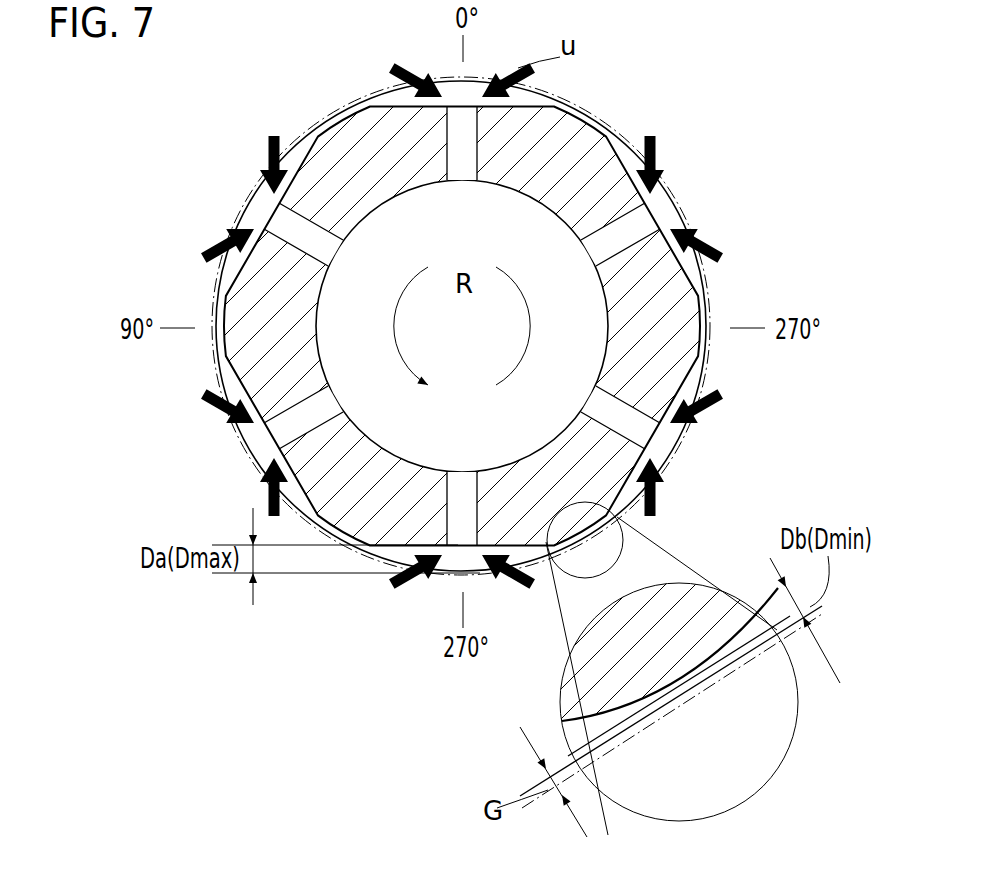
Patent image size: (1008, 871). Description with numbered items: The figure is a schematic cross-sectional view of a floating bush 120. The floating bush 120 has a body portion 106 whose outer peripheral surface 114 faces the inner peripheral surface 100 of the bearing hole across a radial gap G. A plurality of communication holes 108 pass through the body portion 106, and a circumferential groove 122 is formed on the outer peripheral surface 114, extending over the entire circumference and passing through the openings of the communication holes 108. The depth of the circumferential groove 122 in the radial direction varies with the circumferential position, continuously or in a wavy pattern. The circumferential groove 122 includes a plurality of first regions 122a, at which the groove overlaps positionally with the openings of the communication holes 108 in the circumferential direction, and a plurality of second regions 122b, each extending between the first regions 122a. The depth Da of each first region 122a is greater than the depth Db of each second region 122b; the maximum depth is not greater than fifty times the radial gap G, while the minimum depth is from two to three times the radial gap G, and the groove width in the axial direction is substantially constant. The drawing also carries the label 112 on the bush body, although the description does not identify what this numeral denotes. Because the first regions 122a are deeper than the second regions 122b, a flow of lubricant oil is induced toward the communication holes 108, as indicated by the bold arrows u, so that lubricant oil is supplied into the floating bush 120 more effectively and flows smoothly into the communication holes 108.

The inner peripheral surface of the bearing hole 100 is at (712, 705).
The body portion 106 is at (563, 97).
The communication holes 108 is at (672, 204).
The rotor core 112 is at (387, 200).
The outer peripheral surface 114 is at (705, 285).
The floating bush 120 is at (690, 70).
The circumferential groove 122 is at (613, 135).
The first regions 122a is at (250, 205).
The second regions 122b is at (340, 120).